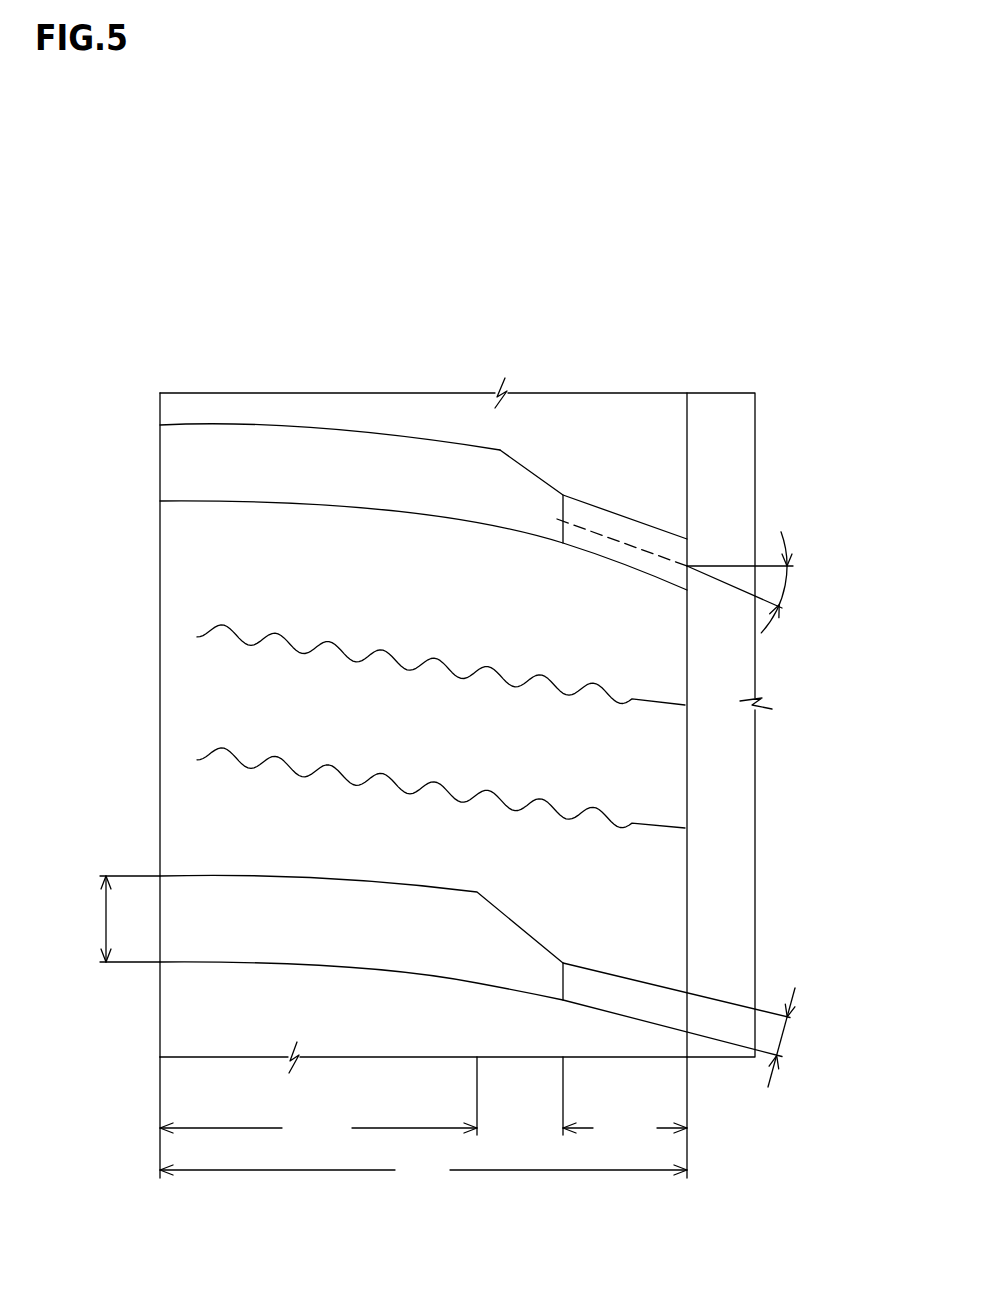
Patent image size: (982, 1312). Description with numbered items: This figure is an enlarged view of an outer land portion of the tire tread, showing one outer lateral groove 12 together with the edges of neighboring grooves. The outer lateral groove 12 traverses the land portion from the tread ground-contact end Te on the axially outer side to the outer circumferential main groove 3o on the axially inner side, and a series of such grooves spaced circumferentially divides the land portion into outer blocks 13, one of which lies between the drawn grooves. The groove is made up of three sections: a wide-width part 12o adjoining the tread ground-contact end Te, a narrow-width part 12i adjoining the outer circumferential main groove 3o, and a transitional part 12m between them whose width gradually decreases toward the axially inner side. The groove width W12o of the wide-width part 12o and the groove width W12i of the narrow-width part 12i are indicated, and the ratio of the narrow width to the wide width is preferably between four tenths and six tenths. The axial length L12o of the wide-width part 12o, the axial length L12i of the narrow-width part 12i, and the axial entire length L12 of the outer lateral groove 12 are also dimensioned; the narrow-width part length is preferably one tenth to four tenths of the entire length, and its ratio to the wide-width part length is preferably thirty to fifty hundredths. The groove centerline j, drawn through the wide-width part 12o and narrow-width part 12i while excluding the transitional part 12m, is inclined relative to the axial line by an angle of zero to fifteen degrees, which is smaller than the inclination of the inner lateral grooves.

The outer lateral groove 12 is at (643, 276).
The wide-width part 12o is at (425, 431).
The transitional part 12m is at (528, 463).
The narrow-width part 12i is at (608, 508).
The outer circumferential main groove 3o is at (722, 440).
The outer block 13 is at (416, 728).
The tread ground-contact end Te is at (160, 548).
The groove centerline j is at (655, 533).
The groove width of the wide-width part W12o is at (115, 919).
The groove width of the narrow-width part W12i is at (808, 1037).
The axial length of the wide-width part L12o is at (318, 1117).
The axial length of the narrow-width part L12i is at (625, 1117).
The axial entire length of the outer lateral groove L12 is at (423, 1172).